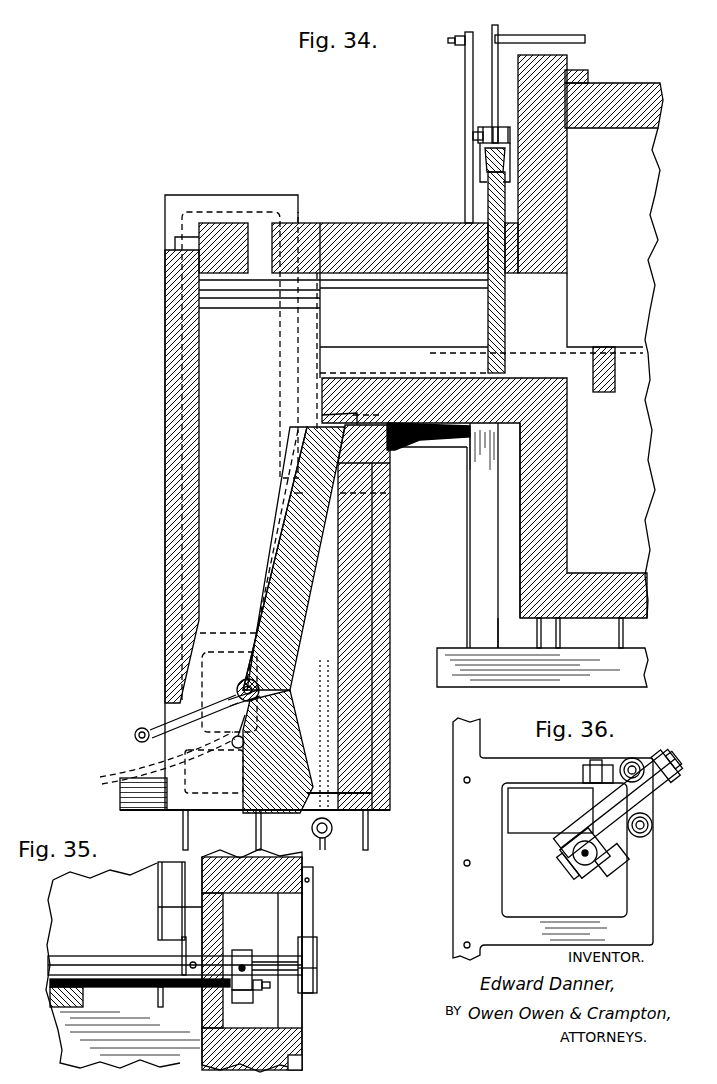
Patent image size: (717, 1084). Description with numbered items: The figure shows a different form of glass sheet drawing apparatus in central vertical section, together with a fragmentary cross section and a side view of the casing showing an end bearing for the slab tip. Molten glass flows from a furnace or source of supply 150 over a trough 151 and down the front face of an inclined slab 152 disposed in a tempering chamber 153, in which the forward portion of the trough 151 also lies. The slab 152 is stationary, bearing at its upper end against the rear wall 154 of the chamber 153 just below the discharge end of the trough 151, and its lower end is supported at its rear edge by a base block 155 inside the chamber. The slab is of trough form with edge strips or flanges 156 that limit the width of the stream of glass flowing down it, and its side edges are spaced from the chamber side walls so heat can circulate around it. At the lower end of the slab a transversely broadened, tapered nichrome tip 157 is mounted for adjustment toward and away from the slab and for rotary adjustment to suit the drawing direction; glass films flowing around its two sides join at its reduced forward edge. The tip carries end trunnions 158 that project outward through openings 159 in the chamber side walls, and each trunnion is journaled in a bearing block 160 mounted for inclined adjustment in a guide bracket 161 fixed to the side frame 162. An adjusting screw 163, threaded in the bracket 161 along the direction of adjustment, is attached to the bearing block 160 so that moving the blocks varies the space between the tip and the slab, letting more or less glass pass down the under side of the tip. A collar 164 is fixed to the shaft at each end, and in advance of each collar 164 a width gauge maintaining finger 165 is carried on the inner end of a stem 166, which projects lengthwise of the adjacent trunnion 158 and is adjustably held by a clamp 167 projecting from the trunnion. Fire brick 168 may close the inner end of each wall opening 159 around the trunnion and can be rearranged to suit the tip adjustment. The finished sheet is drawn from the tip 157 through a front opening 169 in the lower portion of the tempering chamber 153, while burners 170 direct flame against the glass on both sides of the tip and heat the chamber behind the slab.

In FIG. 34, the furnace or source of supply 150 is at (584, 336).
In FIG. 34, the trough 151 is at (422, 368).
In FIG. 34, the inclined slab 152 is at (293, 557).
In FIG. 34, the tempering chamber 153 is at (404, 502).
In FIG. 34, the rear wall 154 is at (373, 528).
In FIG. 34, the base block 155 is at (283, 783).
In FIG. 35, the base block 155 is at (72, 1027).
In FIG. 34, the edge strips or flanges 156 is at (287, 523).
In FIG. 34, the tip 157 is at (240, 685).
In FIG. 35, the tip 157 is at (107, 967).
In FIG. 35, the end trunnions 158 is at (262, 957).
In FIG. 35, the openings 159 is at (267, 1013).
In FIG. 36, the openings 159 is at (550, 905).
In FIG. 35, the bearing block 160 is at (317, 968).
In FIG. 36, the bearing block 160 is at (563, 862).
In FIG. 35, the guide bracket 161 is at (313, 907).
In FIG. 36, the guide bracket 161 is at (610, 863).
In FIG. 36, the side frame 162 is at (473, 907).
In FIG. 36, the adjusting screw 163 is at (670, 763).
In FIG. 35, the collar 164 is at (167, 963).
In FIG. 35, the width gauge maintaining finger 165 is at (130, 1033).
In FIG. 35, the stem 166 is at (200, 995).
In FIG. 35, the clamp 167 is at (240, 950).
In FIG. 35, the fire brick 168 is at (173, 911).
In FIG. 34, the front opening 169 is at (177, 767).
In FIG. 34, the burners 170 is at (142, 728).